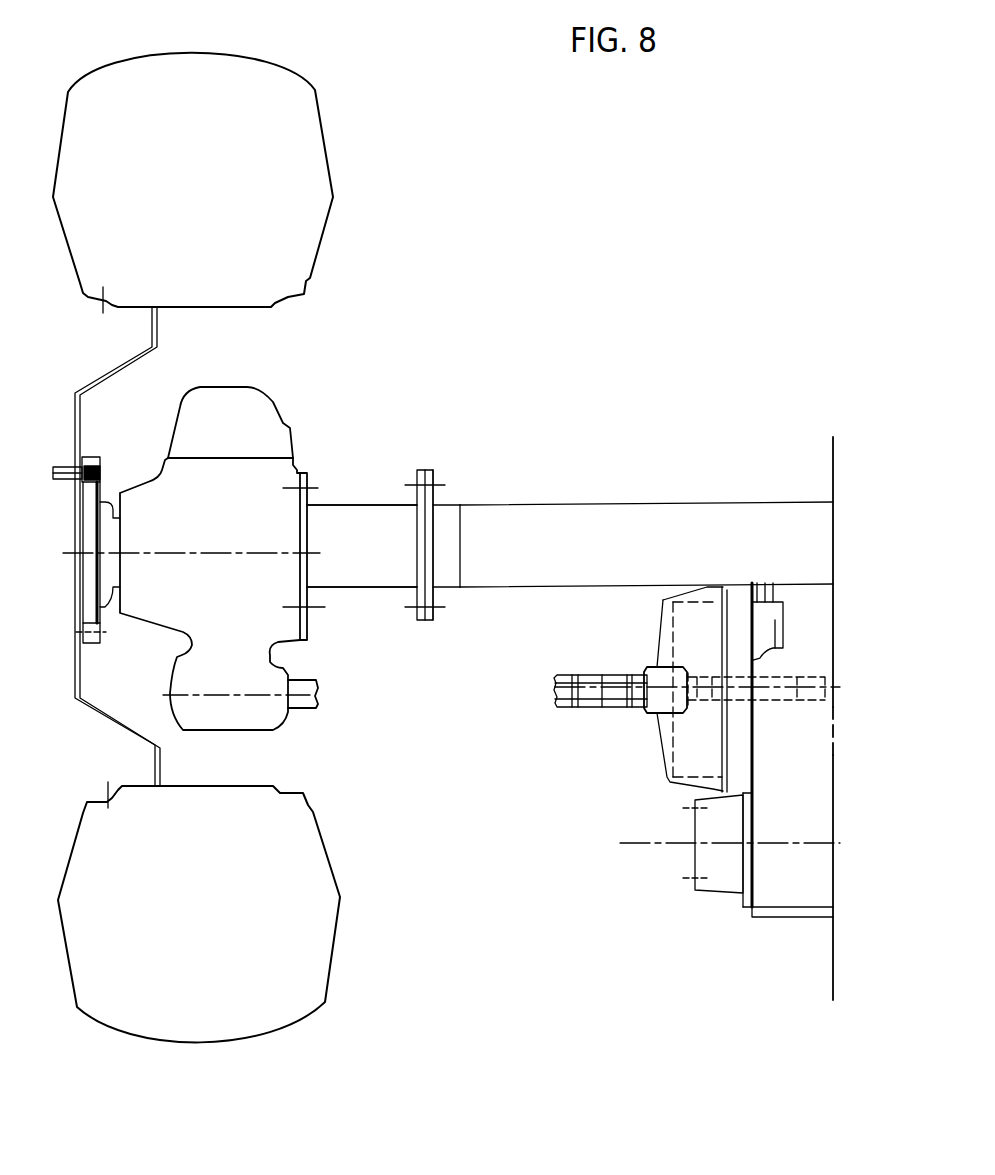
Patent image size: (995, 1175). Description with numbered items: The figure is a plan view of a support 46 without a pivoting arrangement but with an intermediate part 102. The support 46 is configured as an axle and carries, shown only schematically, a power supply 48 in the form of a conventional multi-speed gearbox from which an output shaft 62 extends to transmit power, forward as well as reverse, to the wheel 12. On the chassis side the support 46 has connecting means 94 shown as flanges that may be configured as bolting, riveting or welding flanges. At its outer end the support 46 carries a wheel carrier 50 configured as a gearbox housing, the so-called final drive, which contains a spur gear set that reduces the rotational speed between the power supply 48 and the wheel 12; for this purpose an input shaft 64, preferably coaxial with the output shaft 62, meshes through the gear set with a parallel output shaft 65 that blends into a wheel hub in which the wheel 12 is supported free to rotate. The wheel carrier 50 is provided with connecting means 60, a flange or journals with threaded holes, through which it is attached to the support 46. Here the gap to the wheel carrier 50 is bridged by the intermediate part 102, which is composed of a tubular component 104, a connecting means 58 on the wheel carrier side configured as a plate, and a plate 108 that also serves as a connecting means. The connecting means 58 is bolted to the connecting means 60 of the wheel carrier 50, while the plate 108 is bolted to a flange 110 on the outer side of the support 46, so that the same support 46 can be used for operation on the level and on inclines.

The wheel 12 is at (207, 146).
The support 46 is at (695, 500).
The power supply 48 is at (742, 902).
The wheel carrier 50 is at (192, 422).
The connecting means on the side of the wheel carrier 58 is at (312, 468).
The connecting means 60 is at (308, 478).
The output shaft 62 is at (592, 710).
The input shaft 64 is at (307, 708).
The output shaft 65 is at (74, 603).
The connecting means on the side of the chassis 94 is at (447, 527).
The intermediate part 102 is at (357, 513).
The tubular component 104 is at (383, 572).
The plate 108 is at (410, 473).
The flange 110 is at (437, 473).